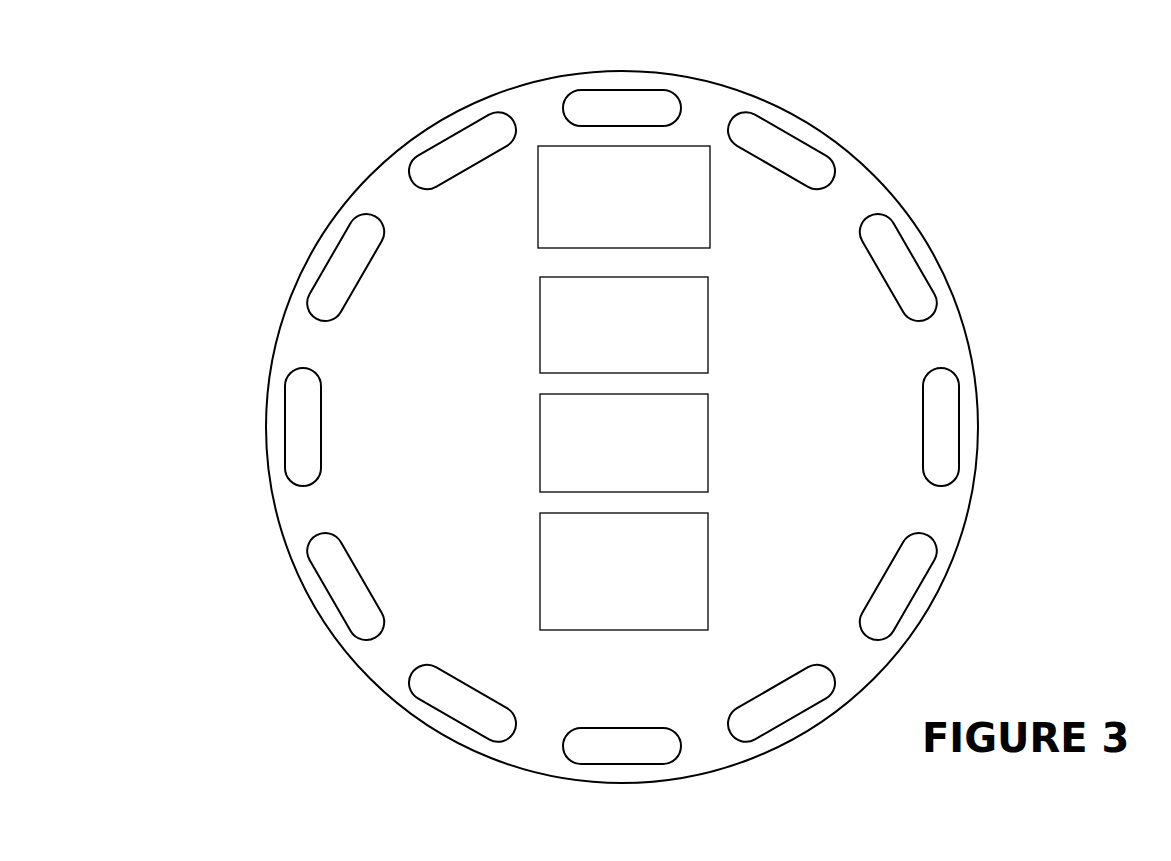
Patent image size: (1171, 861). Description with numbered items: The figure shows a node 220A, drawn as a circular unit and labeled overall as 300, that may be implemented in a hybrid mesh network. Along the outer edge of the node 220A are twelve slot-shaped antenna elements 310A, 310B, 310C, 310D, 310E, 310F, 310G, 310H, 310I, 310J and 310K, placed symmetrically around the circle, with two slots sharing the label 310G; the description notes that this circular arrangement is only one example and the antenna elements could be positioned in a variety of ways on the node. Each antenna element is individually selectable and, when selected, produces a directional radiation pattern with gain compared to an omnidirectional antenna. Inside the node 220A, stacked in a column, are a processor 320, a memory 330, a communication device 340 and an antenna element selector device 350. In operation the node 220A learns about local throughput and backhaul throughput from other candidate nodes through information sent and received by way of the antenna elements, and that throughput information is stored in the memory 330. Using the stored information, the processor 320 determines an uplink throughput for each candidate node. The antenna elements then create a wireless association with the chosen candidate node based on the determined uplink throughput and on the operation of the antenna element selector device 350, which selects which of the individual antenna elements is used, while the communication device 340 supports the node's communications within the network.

The node apparatus 300 is at (169, 75).
The node 220A is at (622, 427).
The antenna element 310A is at (797, 137).
The antenna element 310B is at (917, 263).
The antenna element 310C is at (958, 428).
The antenna element 310D is at (917, 597).
The antenna element 310E is at (785, 717).
The antenna element 310F is at (623, 764).
The antenna element 310G is at (445, 717).
The antenna element 310H is at (287, 428).
The antenna element 310I is at (323, 260).
The antenna element 310J is at (440, 140).
The antenna element 310K is at (647, 38).
The processor 320 is at (640, 216).
The memory 330 is at (640, 347).
The communication device 340 is at (640, 476).
The antenna element selector device 350 is at (640, 617).